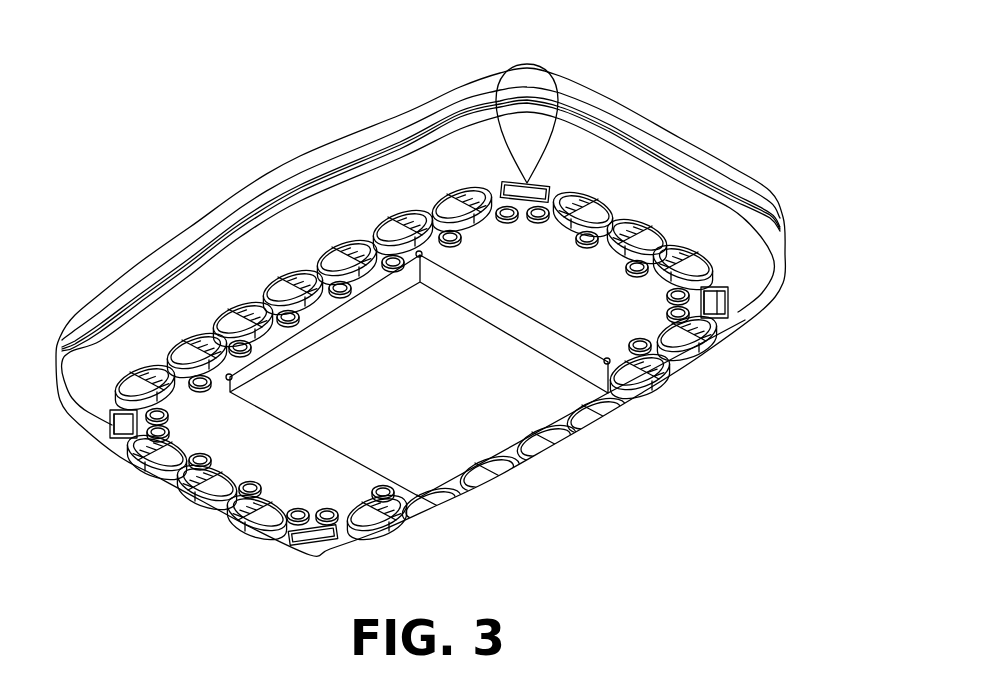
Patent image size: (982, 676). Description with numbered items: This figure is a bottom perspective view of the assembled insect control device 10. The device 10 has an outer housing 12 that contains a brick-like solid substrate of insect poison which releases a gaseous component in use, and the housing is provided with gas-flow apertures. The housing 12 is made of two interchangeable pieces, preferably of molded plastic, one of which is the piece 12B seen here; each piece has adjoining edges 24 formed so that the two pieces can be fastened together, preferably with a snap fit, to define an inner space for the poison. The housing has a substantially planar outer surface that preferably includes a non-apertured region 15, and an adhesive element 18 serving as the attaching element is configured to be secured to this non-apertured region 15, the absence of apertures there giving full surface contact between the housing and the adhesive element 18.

The insect control device 10 is at (237, 163).
The outer housing 12 is at (657, 117).
The housing piece 12B is at (283, 482).
The non-apertured region 15 is at (632, 317).
The adhesive element 18 is at (428, 401).
The adjoining edges 24 is at (742, 193).